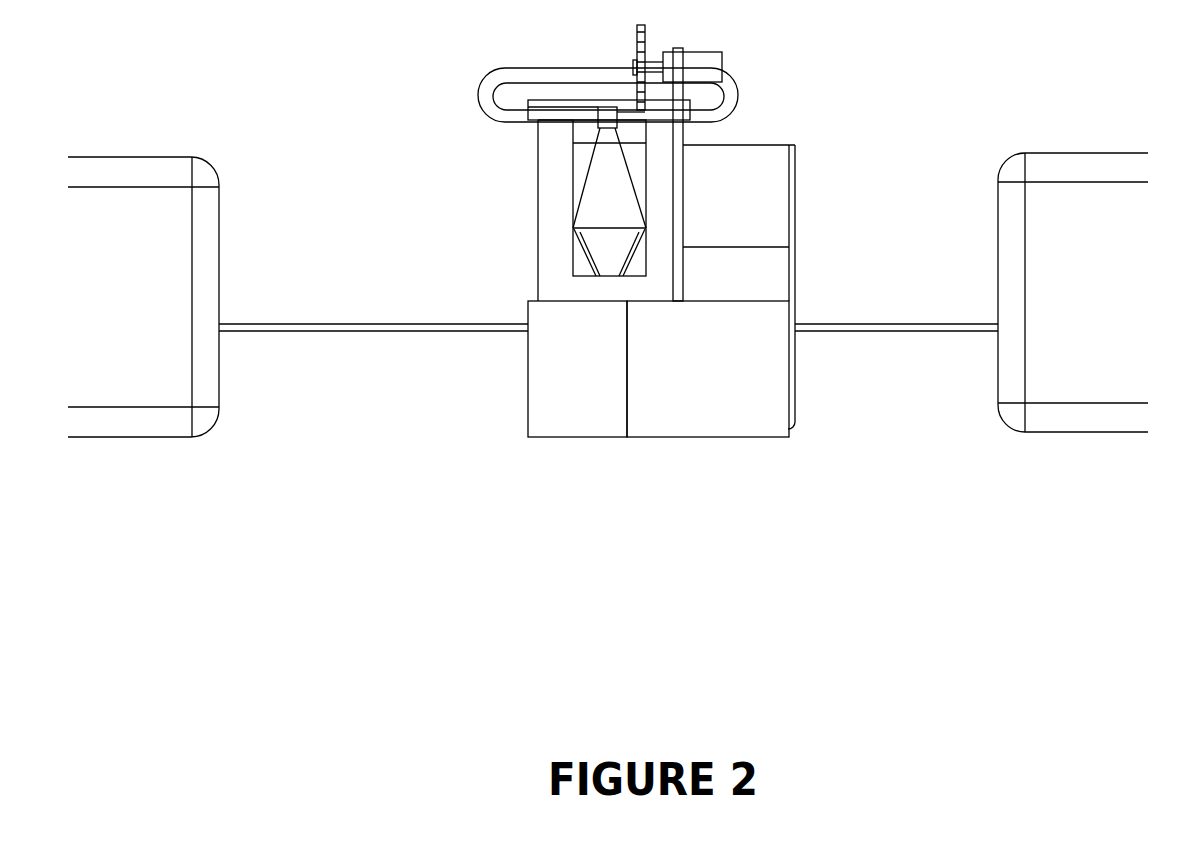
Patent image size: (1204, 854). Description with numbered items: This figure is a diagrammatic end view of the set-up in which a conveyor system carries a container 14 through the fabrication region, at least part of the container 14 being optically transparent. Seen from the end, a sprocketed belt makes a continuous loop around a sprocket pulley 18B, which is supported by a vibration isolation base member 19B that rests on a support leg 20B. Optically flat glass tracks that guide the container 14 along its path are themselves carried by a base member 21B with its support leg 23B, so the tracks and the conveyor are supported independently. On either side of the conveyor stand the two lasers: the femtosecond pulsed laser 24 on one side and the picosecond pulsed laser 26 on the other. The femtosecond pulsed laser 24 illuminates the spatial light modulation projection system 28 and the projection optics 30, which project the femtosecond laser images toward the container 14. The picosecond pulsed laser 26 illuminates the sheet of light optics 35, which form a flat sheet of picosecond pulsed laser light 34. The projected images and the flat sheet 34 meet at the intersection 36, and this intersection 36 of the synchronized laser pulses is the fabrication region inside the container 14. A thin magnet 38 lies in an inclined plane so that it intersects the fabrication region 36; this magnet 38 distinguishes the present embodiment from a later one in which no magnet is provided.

The container 14 is at (592, 108).
The sprocket pulley 18B is at (643, 33).
The vibration isolation base member 19B is at (722, 415).
The support leg 20B is at (677, 170).
The base member 21B is at (578, 415).
The support leg 23B is at (565, 283).
The femtosecond pulsed laser 24 is at (1078, 362).
The picosecond pulsed laser 26 is at (119, 378).
The spatial light modulation projection system 28 is at (773, 205).
The projection optics 30 is at (597, 153).
The flat sheet of picosecond pulsed laser light 34 is at (613, 192).
The sheet of light optics 35 is at (608, 257).
The intersection 36 is at (608, 108).
The thin magnet 38 is at (503, 75).